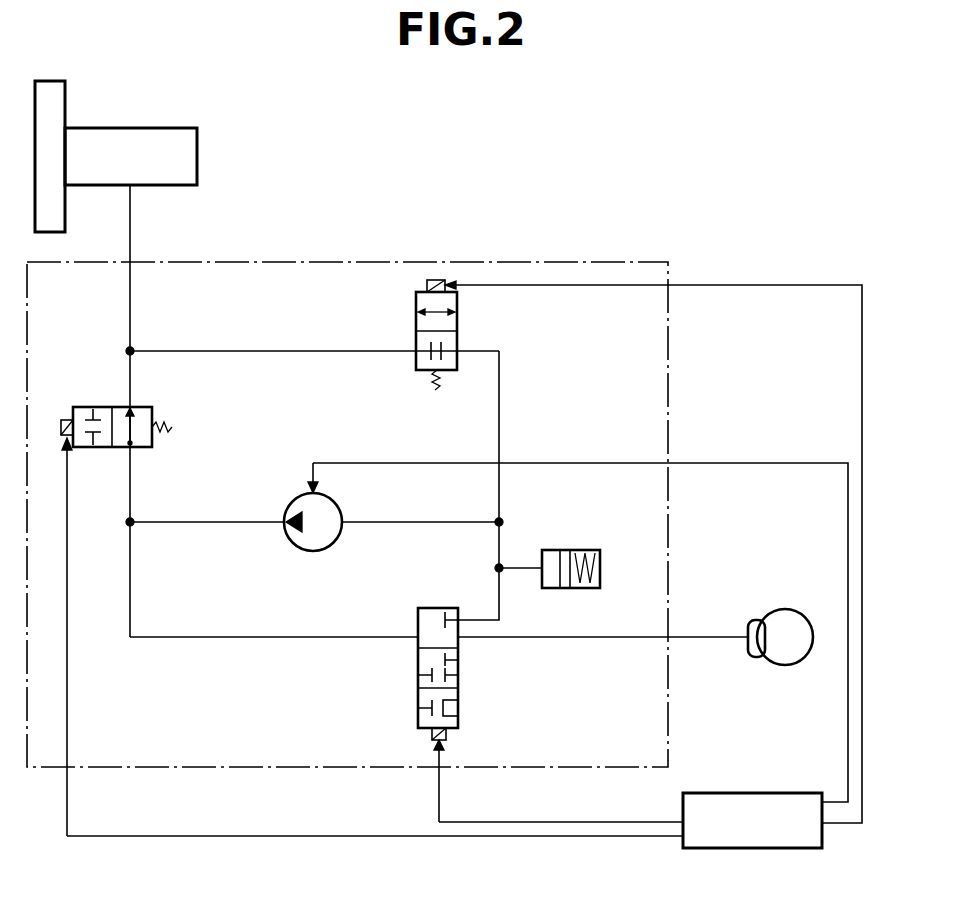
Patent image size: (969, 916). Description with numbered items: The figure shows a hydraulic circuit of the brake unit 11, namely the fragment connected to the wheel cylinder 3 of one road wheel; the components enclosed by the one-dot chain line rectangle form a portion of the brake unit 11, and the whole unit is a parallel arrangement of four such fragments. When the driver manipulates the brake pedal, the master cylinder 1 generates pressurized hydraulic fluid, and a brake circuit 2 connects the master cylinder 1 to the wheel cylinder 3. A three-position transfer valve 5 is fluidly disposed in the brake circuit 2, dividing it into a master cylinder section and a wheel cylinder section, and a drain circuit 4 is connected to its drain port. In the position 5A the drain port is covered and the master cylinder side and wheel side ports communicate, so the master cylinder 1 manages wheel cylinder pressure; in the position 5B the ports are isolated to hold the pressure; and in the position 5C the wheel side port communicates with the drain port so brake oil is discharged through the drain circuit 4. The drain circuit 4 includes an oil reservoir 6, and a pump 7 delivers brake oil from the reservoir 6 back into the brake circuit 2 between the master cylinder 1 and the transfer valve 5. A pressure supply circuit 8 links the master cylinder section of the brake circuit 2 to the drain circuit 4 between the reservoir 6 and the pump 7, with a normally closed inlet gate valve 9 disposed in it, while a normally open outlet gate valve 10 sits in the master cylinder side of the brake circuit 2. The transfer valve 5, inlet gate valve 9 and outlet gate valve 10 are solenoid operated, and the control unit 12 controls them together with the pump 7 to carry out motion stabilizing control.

The master cylinder 1 is at (133, 127).
The brake circuit 2 is at (131, 235).
The wheel cylinder 3 is at (755, 619).
The drain circuit 4 is at (499, 590).
The three-position transfer valve 5 is at (434, 674).
The pressure-applying position 5A is at (418, 620).
The pressure-holding position 5B is at (458, 667).
The pressure-releasing position 5C is at (458, 707).
The oil reservoir 6 is at (580, 550).
The pump 7 is at (315, 552).
The pressure supply circuit 8 is at (500, 400).
The inlet gate valve 9 is at (416, 323).
The outlet gate valve 10 is at (98, 408).
The brake unit 11 is at (469, 260).
The control unit 12 is at (778, 793).